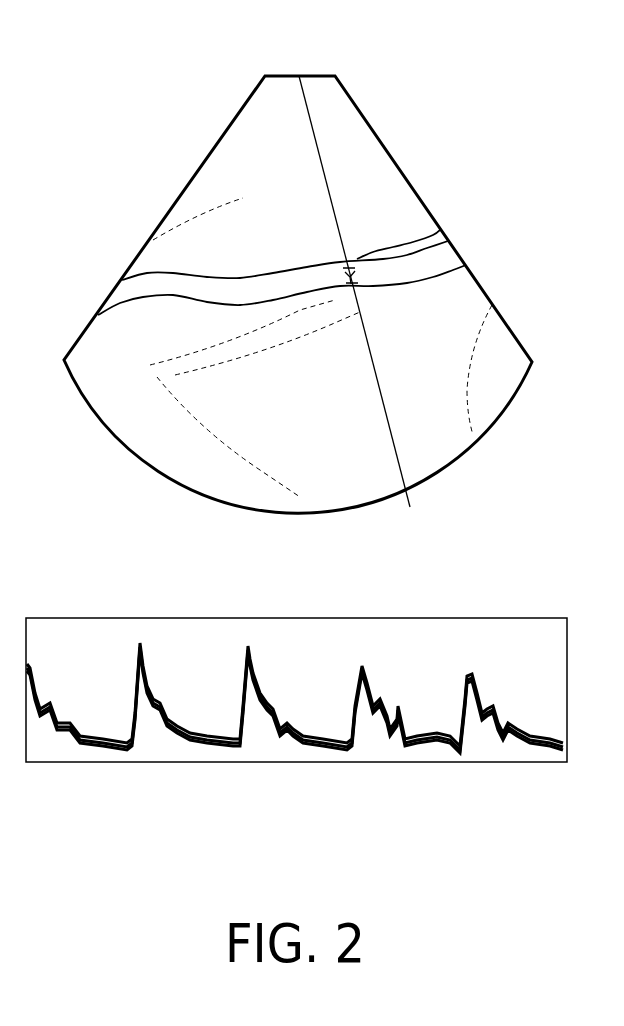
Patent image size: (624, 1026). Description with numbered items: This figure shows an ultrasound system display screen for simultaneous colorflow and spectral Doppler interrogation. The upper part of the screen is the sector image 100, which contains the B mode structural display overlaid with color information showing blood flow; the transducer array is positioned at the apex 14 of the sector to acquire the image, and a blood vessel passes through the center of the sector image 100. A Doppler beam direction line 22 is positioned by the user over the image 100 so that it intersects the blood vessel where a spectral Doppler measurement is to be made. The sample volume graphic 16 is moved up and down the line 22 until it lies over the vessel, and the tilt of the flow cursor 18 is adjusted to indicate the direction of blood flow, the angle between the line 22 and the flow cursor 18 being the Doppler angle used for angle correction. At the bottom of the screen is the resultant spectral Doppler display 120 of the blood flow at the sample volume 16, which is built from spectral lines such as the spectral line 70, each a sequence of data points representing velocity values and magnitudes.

The sector image 100 is at (148, 158).
The apex 14 is at (298, 75).
The sample volume graphic 16 is at (350, 264).
The flow cursor 18 is at (432, 234).
The Doppler beam direction line 22 is at (322, 157).
The spectral line 70 is at (397, 690).
The spectral Doppler display 120 is at (148, 796).